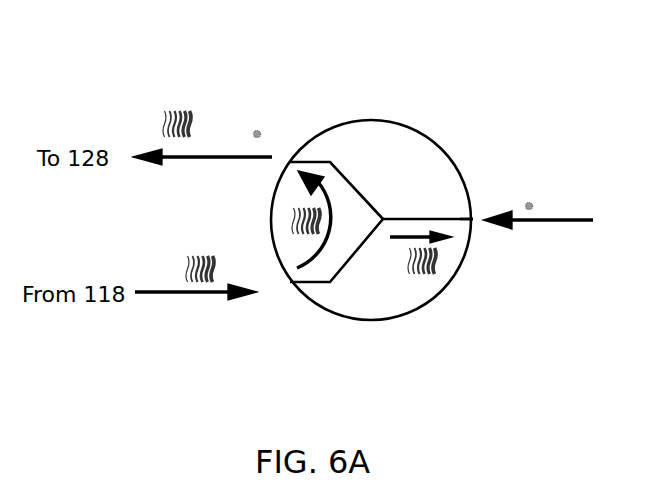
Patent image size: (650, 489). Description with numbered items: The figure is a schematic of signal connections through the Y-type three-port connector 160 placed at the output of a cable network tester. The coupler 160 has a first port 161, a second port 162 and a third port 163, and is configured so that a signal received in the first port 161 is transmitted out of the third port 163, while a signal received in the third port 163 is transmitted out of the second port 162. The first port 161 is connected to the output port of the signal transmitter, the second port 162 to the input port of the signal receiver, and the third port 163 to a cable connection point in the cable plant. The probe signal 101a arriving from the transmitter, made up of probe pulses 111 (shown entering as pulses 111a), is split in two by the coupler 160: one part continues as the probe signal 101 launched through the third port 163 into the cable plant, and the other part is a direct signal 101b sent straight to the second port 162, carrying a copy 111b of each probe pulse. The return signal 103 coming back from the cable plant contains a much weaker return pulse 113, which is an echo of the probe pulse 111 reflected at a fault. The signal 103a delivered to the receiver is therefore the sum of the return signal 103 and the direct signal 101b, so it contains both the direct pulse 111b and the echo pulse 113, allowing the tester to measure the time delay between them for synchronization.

The Y-type three-port connector 160 is at (373, 120).
The probe signal 101 is at (403, 228).
The probe signal received from output port 101a is at (177, 295).
The direct signal 101b is at (343, 250).
The return signal 103 is at (563, 217).
The received signal 103a is at (210, 150).
The probe pulse 111 is at (430, 280).
The probe pulse 111a is at (180, 262).
The direct pulse 111b is at (175, 108).
The return pulse 113 is at (263, 127).
The first port 161 is at (303, 283).
The second port 162 is at (302, 160).
The third port 163 is at (472, 225).